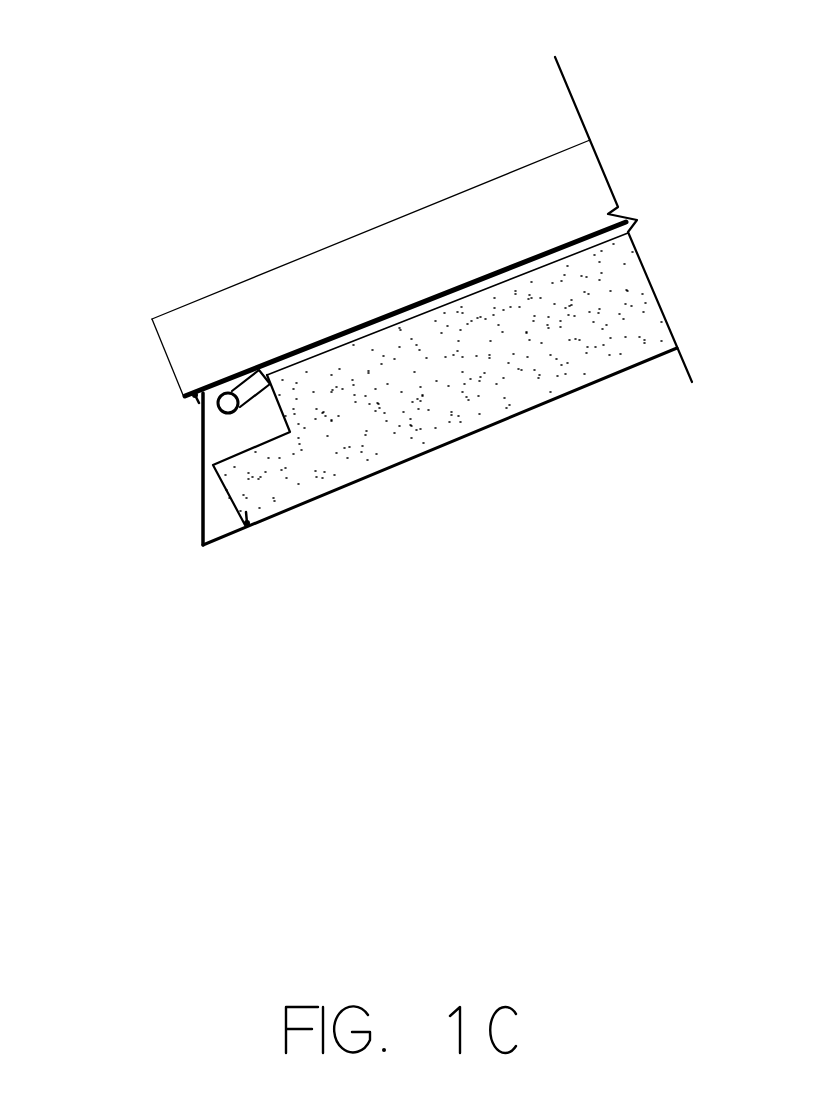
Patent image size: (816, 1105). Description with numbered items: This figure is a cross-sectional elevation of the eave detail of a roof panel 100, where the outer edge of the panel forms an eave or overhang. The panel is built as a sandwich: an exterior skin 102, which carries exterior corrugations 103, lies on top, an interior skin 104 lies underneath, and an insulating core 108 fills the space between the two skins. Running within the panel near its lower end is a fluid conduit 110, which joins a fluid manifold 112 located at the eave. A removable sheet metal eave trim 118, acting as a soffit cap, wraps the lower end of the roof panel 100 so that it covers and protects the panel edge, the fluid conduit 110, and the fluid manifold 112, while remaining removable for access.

The roof panel 100 is at (372, 339).
The exterior skin 102 is at (372, 226).
The exterior corrugations 103 is at (367, 233).
The interior skin 104 is at (382, 472).
The insulating core 108 is at (455, 372).
The fluid conduits 110 is at (322, 348).
The fluid manifold 112 is at (227, 401).
The removable sheet metal eave trim 118 is at (225, 540).